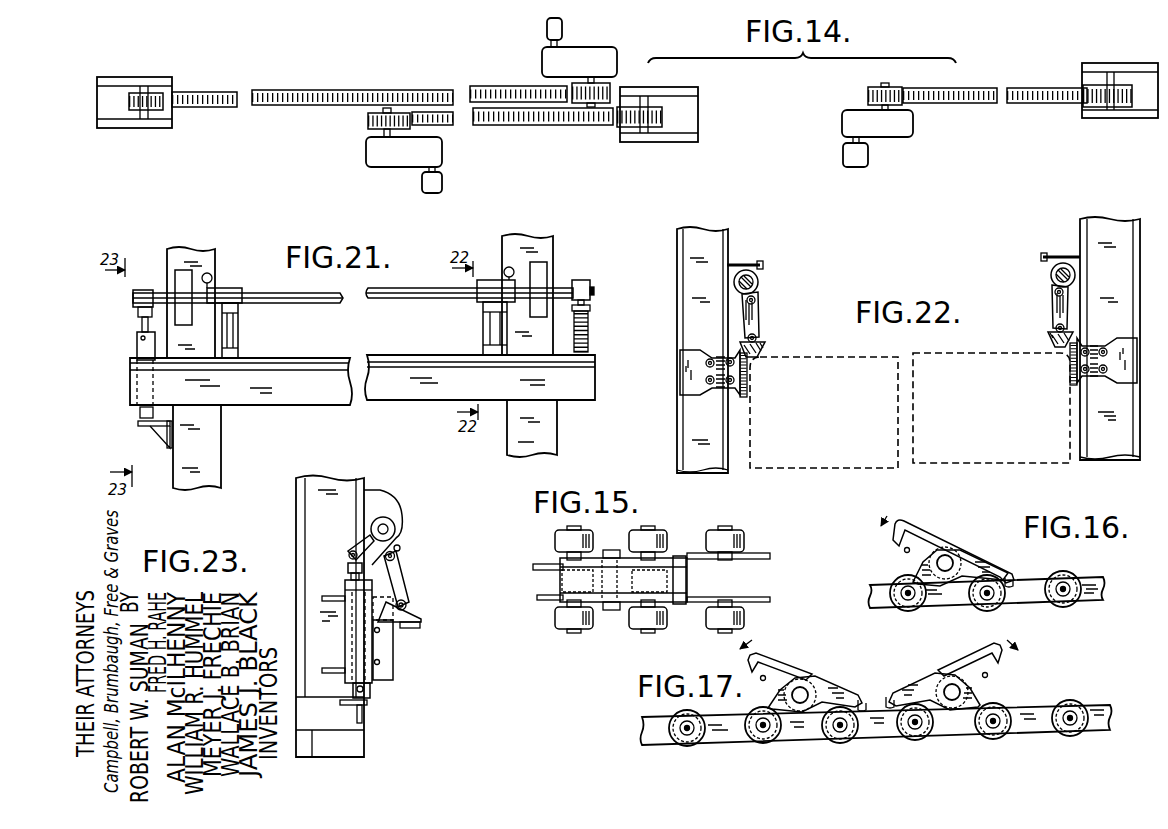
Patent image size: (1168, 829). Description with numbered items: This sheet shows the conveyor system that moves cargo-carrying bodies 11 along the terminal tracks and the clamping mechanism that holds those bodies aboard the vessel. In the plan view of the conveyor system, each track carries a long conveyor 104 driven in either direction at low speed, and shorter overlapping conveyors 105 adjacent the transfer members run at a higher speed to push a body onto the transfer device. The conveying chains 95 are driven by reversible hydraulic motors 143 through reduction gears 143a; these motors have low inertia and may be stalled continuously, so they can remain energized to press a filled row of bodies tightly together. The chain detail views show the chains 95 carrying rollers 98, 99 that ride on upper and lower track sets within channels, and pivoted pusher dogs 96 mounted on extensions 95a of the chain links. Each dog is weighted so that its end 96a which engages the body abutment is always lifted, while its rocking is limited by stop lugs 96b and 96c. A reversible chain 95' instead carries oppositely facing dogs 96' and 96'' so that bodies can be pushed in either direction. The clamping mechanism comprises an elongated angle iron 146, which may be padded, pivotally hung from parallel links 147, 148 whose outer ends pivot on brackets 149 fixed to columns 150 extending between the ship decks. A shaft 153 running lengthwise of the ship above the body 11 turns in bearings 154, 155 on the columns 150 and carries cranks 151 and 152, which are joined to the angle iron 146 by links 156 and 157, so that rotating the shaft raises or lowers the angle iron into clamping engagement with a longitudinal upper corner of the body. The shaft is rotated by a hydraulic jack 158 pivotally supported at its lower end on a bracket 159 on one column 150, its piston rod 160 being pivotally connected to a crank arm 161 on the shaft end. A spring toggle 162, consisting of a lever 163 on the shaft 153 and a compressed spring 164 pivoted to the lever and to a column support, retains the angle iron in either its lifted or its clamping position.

In FIG. 14, the long conveyor 104 is at (314, 88).
In FIG. 14, the conveying chain 95 is at (584, 107).
In FIG. 15, the conveying chain 95 is at (662, 560).
In FIG. 16, the conveying chain 95 is at (1008, 601).
In FIG. 14, the shorter conveyor 105 is at (517, 127).
In FIG. 14, the reduction gears 143a is at (366, 152).
In FIG. 14, the hydraulic motor 143 is at (443, 187).
In FIG. 21, the column 150 is at (218, 438).
In FIG. 22, the column 150 is at (703, 231).
In FIG. 23, the column 150 is at (332, 478).
In FIG. 21, the angle iron 146 is at (362, 380).
In FIG. 22, the angle iron 146 is at (766, 350).
In FIG. 23, the angle iron 146 is at (421, 617).
In FIG. 21, the shaft 153 is at (326, 304).
In FIG. 22, the shaft 153 is at (759, 280).
In FIG. 23, the shaft 153 is at (390, 528).
In FIG. 21, the hydraulic jack 158 is at (137, 345).
In FIG. 23, the hydraulic jack 158 is at (366, 648).
In FIG. 21, the bearing 154 is at (183, 270).
In FIG. 21, the crank 151 is at (235, 288).
In FIG. 22, the crank 151 is at (757, 297).
In FIG. 23, the crank 151 is at (400, 547).
In FIG. 21, the link 156 is at (234, 330).
In FIG. 22, the link 156 is at (759, 318).
In FIG. 23, the link 156 is at (403, 574).
In FIG. 21, the bracket 159 is at (158, 433).
In FIG. 23, the bracket 159 is at (371, 698).
In FIG. 21, the crank 152 is at (489, 280).
In FIG. 21, the link 157 is at (488, 328).
In FIG. 21, the bearing 155 is at (542, 285).
In FIG. 21, the lever 163 is at (591, 288).
In FIG. 21, the spring toggle 162 is at (596, 298).
In FIG. 21, the compressed spring 164 is at (590, 330).
In FIG. 22, the bracket 149 is at (696, 378).
In FIG. 22, the parallel link 147 is at (720, 357).
In FIG. 22, the parallel link 148 is at (720, 386).
In FIG. 22, the cargo-carrying body 11 is at (1013, 352).
In FIG. 23, the crank arm 161 is at (362, 543).
In FIG. 23, the piston rod 160 is at (350, 568).
In FIG. 15, the roller 98 is at (555, 542).
In FIG. 15, the roller 99 is at (555, 622).
In FIG. 16, the roller 99 is at (912, 611).
In FIG. 17, the roller 99 is at (690, 747).
In FIG. 15, the stop lug 96b is at (560, 583).
In FIG. 16, the stop lug 96b is at (905, 552).
In FIG. 15, the stop lug 96c is at (680, 556).
In FIG. 16, the stop lug 96c is at (1008, 577).
In FIG. 16, the pusher dog 96 is at (960, 542).
In FIG. 16, the link extension 95a is at (983, 570).
In FIG. 16, the dog end 96a is at (902, 522).
In FIG. 17, the reversible conveyor chain 95' is at (876, 702).
In FIG. 17, the pivoted dog 96' is at (803, 675).
In FIG. 17, the pivoted dog 96'' is at (952, 671).